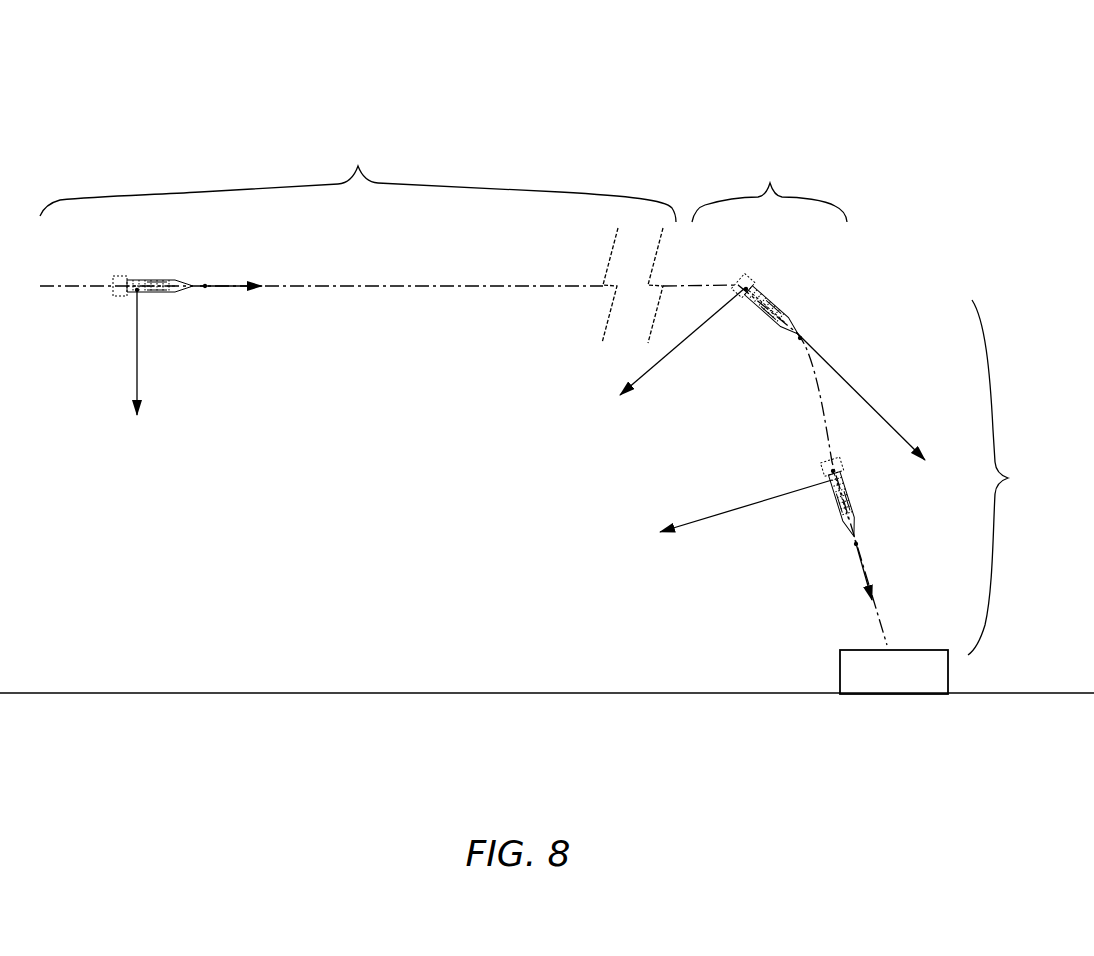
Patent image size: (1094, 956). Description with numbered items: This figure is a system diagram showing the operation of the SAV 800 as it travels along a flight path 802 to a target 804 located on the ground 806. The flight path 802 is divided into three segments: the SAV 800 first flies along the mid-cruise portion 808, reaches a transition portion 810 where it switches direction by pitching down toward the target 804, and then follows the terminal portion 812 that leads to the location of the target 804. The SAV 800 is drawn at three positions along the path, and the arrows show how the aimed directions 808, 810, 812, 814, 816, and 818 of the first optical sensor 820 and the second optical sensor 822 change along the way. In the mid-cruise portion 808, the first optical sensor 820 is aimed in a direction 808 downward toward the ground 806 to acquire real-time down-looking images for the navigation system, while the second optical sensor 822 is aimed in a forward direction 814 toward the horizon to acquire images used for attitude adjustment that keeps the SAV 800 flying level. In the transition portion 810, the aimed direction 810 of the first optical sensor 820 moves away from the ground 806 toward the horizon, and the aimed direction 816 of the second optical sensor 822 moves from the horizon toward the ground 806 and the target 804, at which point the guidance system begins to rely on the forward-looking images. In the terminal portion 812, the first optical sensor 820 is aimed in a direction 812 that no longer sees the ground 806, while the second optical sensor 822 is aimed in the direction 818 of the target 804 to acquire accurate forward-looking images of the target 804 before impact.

The SAV 800 is at (988, 145).
The flight path 802 is at (335, 287).
The target 804 is at (894, 672).
The ground 806 is at (493, 692).
The mid-cruise portion 808 is at (108, 356).
The transition portion 810 is at (690, 392).
The terminal portion 812 is at (720, 515).
The aimed direction 814 is at (223, 290).
The aimed direction 816 is at (855, 392).
The aimed direction 818 is at (868, 560).
The first optical sensor 820 is at (140, 296).
The second optical sensor 822 is at (207, 283).